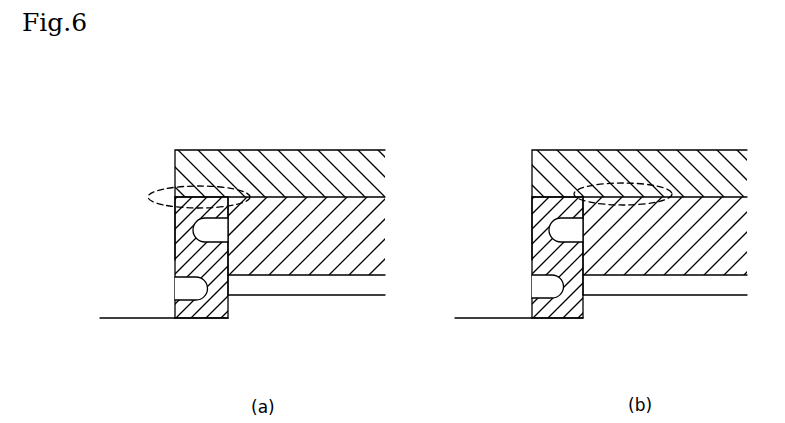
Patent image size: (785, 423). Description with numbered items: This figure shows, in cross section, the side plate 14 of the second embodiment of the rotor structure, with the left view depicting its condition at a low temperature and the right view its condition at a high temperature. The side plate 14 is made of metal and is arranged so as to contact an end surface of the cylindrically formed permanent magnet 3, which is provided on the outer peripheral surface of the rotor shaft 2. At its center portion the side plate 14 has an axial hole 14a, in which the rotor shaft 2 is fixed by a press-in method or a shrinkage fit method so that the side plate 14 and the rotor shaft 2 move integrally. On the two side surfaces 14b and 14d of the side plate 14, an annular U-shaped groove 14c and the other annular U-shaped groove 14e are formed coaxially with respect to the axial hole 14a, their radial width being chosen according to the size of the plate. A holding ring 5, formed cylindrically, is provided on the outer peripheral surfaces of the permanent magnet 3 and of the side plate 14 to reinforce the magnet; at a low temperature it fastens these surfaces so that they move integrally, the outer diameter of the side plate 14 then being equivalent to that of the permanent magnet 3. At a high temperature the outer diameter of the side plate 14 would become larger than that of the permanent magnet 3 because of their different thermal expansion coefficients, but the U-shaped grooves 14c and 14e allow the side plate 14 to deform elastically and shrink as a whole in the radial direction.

The rotor shaft 2 is at (279, 355).
The permanent magnet 3 is at (317, 249).
The holding ring 5 is at (344, 168).
The side plate 14 is at (207, 233).
The axial hole 14a is at (200, 327).
The side surface 14b is at (228, 262).
The U-shaped groove 14c is at (175, 233).
The side surface 14d is at (185, 245).
The U-shaped groove 14e is at (188, 288).